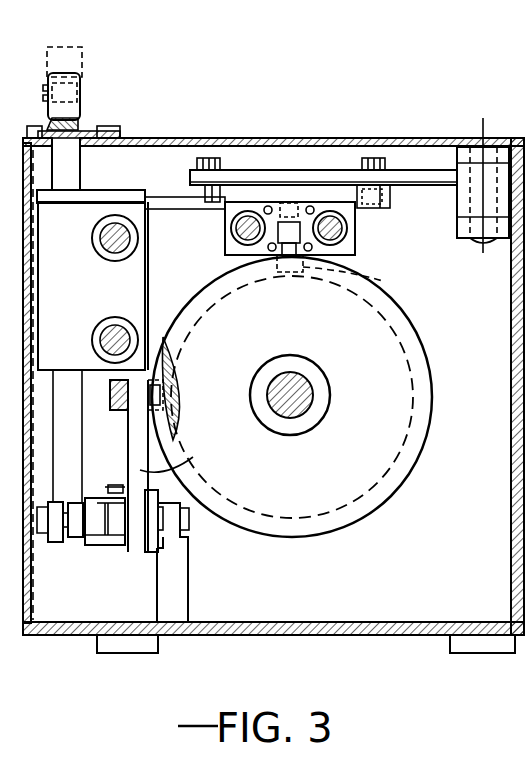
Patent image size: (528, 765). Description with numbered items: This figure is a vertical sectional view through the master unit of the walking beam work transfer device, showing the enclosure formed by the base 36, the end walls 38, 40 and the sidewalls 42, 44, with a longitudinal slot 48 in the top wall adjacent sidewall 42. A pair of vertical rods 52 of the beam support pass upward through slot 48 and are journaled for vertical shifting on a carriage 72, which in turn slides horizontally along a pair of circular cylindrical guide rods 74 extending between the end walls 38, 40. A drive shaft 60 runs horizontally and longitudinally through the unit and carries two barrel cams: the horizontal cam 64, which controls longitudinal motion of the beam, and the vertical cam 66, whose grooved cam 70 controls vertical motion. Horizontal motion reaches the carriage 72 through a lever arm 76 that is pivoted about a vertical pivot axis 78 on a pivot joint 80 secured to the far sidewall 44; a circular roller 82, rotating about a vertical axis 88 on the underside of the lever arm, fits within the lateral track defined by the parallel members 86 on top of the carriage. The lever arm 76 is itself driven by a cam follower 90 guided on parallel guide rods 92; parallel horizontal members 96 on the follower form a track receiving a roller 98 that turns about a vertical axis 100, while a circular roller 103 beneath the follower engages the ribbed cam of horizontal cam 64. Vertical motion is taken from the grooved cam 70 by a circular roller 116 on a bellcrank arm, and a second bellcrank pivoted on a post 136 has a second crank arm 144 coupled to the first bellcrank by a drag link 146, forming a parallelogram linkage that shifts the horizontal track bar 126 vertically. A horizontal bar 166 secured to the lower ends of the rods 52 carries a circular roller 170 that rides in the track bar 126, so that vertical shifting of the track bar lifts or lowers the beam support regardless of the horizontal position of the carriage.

The base 36 is at (327, 628).
The end wall 38 is at (422, 592).
The end wall 40 is at (6, 471).
The sidewall 42 is at (60, 104).
The sidewall 44 is at (512, 495).
The longitudinal slot 48 is at (300, 142).
The vertical rods 52 is at (80, 188).
The drive shaft 60 is at (310, 384).
The barrel cam 64 is at (432, 355).
The barrel cam 66 is at (180, 388).
The grooved cam 70 is at (170, 350).
The carriage 72 is at (93, 286).
The guide rods 74 is at (127, 333).
The lever arm 76 is at (230, 180).
The vertical pivot axis 78 is at (483, 118).
The pivot joint 80 is at (497, 258).
The circular roller 82 is at (215, 197).
The parallel members 86 is at (115, 197).
The vertical axis 88 is at (207, 175).
The cam follower 90 is at (355, 252).
The guide rods 92 is at (240, 232).
The parallel horizontal members 96 is at (318, 195).
The roller 98 is at (395, 197).
The vertical axis 100 is at (373, 178).
The circular roller 103 is at (380, 281).
The circular roller 116 is at (175, 392).
The horizontal track bar 126 is at (110, 553).
The post 136 is at (173, 597).
The second crank arm 144 is at (190, 458).
The drag link 146 is at (108, 385).
The horizontal bar 166 is at (57, 530).
The circular roller 170 is at (97, 512).